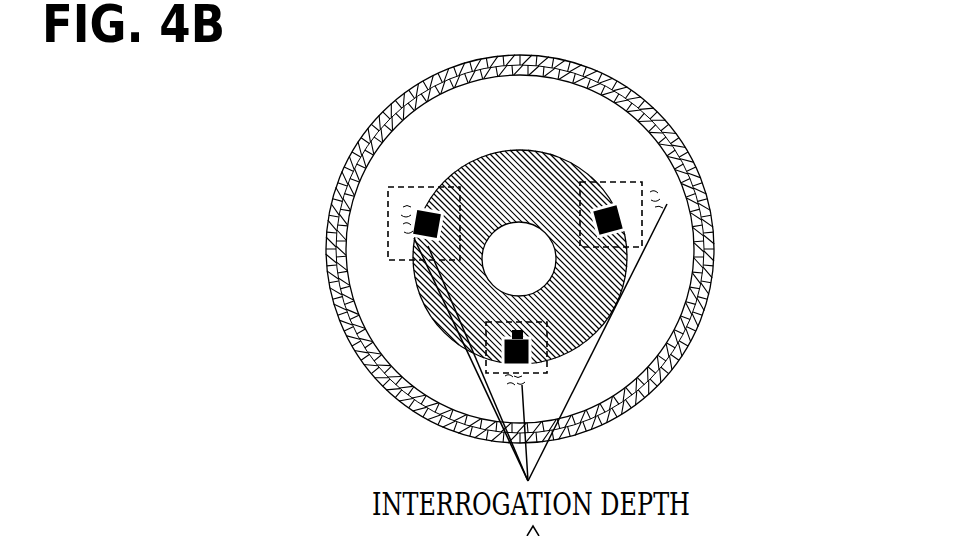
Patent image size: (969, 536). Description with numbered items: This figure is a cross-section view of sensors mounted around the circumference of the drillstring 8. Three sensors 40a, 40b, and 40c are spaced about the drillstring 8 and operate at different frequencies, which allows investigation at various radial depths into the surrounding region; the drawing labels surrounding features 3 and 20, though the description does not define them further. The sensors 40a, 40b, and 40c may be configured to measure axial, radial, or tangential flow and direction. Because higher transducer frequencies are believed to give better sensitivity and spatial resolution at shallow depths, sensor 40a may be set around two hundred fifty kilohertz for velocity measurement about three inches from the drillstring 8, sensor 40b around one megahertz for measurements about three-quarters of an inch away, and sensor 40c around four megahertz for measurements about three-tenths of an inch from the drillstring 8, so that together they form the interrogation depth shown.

The borehole wall 3 is at (463, 87).
The annulus 20 is at (438, 155).
The drillstring 8 is at (558, 173).
The sensor 40a is at (539, 326).
The sensor 40b is at (618, 182).
The sensor 40c is at (457, 183).